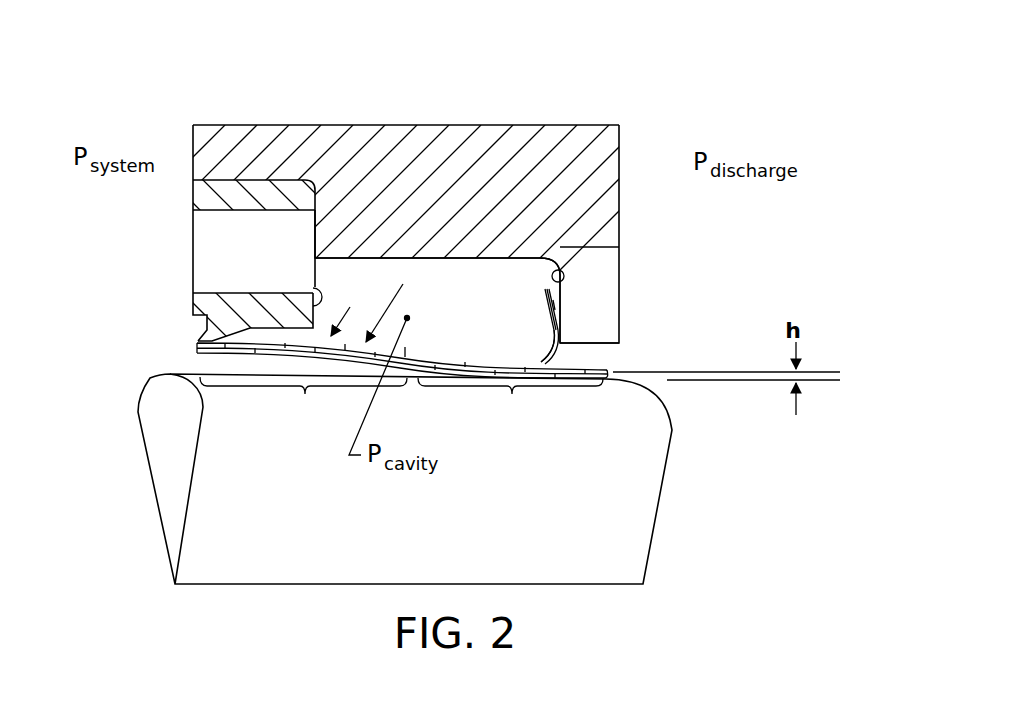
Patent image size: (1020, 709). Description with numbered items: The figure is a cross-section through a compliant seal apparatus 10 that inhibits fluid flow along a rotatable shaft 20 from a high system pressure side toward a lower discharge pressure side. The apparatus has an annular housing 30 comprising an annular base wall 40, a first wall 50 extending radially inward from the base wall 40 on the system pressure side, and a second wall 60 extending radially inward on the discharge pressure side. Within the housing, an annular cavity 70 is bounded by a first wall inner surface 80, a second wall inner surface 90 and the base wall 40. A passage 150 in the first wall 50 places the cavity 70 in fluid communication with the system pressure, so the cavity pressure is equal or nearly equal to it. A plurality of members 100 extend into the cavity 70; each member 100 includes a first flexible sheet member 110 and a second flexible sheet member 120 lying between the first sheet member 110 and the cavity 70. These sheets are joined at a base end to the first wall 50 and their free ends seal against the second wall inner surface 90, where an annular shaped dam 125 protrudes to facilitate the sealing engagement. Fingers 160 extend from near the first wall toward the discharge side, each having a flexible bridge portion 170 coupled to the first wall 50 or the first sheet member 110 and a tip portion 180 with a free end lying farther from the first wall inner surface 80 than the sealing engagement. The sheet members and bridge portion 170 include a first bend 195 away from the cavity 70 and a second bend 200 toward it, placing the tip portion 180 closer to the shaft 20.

The compliant seal apparatus 10 is at (688, 74).
The rotatable shaft 20 is at (662, 480).
The annular housing 30 is at (386, 121).
The annular base wall 40 is at (466, 138).
The first wall 50 is at (237, 312).
The second wall 60 is at (613, 250).
The annular cavity 70 is at (542, 258).
The first wall inner surface 80 is at (314, 292).
The second wall inner surface 90 is at (612, 262).
The member 100 is at (538, 296).
The first flexible sheet member 110 is at (553, 302).
The second flexible sheet member 120 is at (547, 342).
The annular shaped dam 125 is at (558, 335).
The passage 150 is at (237, 254).
The finger 160 is at (250, 357).
The flexible bridge portion 170 is at (303, 401).
The tip portion 180 is at (510, 404).
The first bend 195 is at (352, 307).
The second bend 200 is at (398, 301).